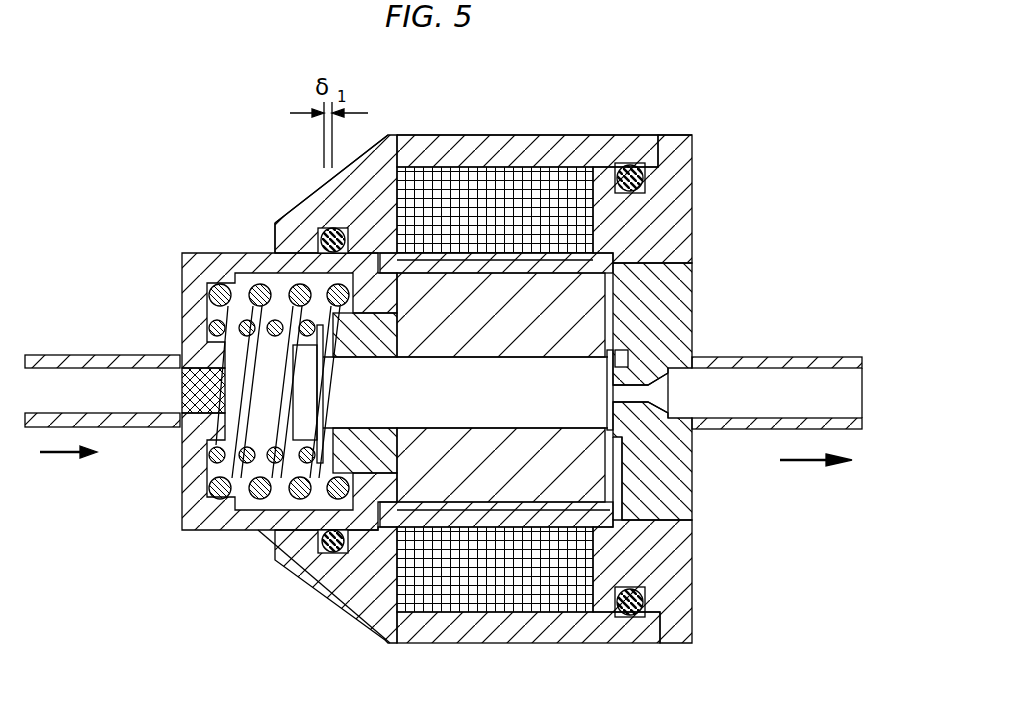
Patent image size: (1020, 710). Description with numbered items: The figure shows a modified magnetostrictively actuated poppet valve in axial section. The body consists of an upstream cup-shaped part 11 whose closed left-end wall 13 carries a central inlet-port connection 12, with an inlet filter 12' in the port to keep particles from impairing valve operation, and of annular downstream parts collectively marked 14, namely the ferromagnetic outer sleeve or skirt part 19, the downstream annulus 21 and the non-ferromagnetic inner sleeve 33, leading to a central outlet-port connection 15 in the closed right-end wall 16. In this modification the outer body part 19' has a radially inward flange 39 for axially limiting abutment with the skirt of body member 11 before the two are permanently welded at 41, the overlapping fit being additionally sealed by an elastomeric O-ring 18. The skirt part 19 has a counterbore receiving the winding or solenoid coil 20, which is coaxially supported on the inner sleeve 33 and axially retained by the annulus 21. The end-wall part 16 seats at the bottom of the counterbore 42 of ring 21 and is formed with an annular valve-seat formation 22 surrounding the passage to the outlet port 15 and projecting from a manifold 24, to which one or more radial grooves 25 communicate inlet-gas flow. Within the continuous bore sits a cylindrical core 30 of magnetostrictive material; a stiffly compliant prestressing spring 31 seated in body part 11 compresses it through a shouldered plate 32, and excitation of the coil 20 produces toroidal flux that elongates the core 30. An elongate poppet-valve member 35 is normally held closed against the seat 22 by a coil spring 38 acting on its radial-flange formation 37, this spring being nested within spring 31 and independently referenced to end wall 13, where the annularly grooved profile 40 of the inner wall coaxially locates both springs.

The upstream cup-shaped body part 11 is at (222, 252).
The inlet-port connection 12 is at (102, 371).
The inlet filter 12' is at (173, 356).
The closed left-end wall 13 is at (186, 478).
The downstream body part 14 is at (528, 118).
The outlet-port connection 15 is at (797, 385).
The downstream end-wall part 16 is at (676, 478).
The elastomeric O-ring 18 is at (328, 228).
The outer sleeve or skirt part 19 is at (528, 365).
The outer body part 19' is at (318, 179).
The winding or solenoid coil 20 is at (577, 185).
The downstream annulus 21 is at (688, 185).
The valve-seat formation 22 is at (618, 392).
The manifold 24 is at (622, 360).
The radial grooves 25 is at (618, 490).
The magnetostrictive core 30 is at (500, 327).
The prestressing spring 31 is at (212, 290).
The shouldered plate 32 is at (382, 463).
The inner sleeve 33 is at (566, 268).
The poppet-valve member 35 is at (447, 400).
The radial-flange formation 37 is at (300, 410).
The coil spring 38 is at (220, 495).
The radially inward flange 39 is at (400, 312).
The annularly grooved profile 40 is at (218, 445).
The weld 41 is at (262, 245).
The counterbore 42 is at (640, 265).